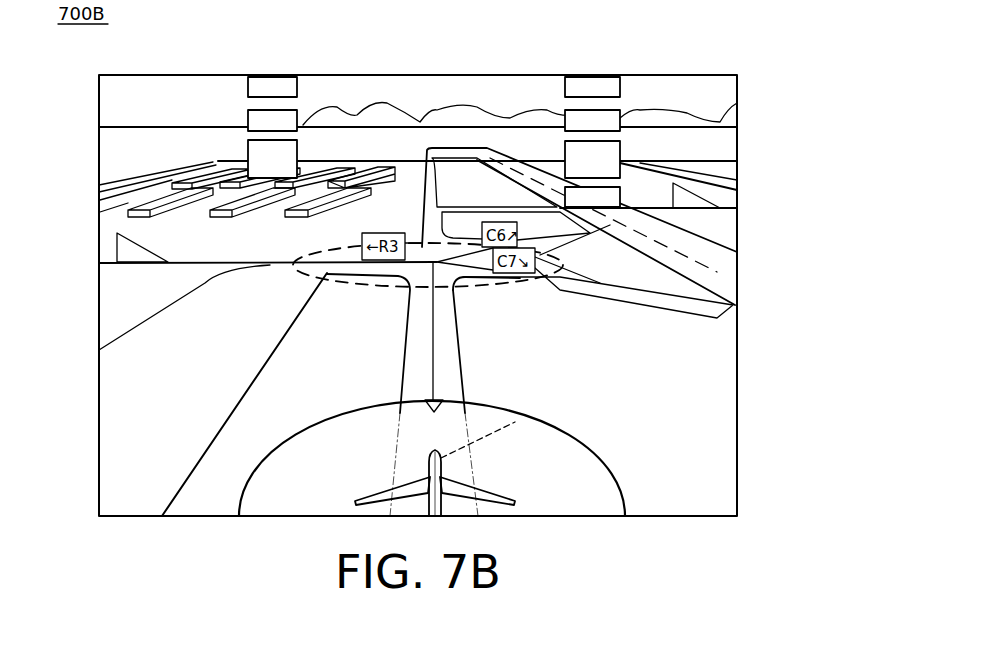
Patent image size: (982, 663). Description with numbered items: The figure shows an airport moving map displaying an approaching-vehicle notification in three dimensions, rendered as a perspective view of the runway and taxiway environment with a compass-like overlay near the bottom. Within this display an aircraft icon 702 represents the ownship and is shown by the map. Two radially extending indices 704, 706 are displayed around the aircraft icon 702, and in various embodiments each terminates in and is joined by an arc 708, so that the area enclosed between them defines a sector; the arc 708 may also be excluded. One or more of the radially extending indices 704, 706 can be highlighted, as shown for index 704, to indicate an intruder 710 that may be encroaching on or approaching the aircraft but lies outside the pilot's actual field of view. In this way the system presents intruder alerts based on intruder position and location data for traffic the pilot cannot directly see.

The aircraft icon 702 is at (425, 478).
The radially extending index 704 is at (485, 445).
The radially extending index 706 is at (377, 433).
The arc 708 is at (500, 414).
The intruder 710 is at (730, 322).